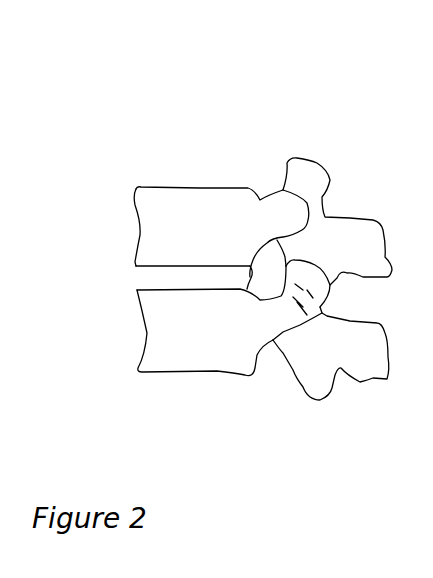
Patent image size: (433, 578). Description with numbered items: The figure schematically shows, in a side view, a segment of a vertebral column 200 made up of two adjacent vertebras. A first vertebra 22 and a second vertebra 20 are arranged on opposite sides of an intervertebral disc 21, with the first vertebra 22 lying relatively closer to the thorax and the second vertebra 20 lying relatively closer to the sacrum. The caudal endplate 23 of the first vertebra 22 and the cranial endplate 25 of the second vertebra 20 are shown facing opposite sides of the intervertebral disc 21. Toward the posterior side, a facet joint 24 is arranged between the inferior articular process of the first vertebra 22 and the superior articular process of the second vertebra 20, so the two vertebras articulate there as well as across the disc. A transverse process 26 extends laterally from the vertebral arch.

The segment of a vertebral column 200 is at (185, 83).
The second vertebra 20 is at (178, 343).
The intervertebral disc 21 is at (165, 280).
The first vertebra 22 is at (187, 213).
The caudal endplate 23 is at (204, 260).
The facet joint 24 is at (320, 308).
The cranial endplate 25 is at (201, 298).
The transverse process 26 is at (282, 217).